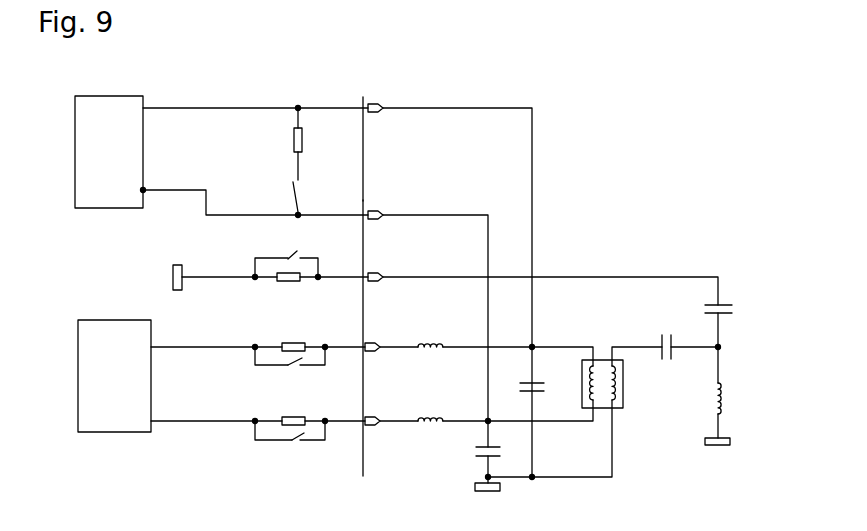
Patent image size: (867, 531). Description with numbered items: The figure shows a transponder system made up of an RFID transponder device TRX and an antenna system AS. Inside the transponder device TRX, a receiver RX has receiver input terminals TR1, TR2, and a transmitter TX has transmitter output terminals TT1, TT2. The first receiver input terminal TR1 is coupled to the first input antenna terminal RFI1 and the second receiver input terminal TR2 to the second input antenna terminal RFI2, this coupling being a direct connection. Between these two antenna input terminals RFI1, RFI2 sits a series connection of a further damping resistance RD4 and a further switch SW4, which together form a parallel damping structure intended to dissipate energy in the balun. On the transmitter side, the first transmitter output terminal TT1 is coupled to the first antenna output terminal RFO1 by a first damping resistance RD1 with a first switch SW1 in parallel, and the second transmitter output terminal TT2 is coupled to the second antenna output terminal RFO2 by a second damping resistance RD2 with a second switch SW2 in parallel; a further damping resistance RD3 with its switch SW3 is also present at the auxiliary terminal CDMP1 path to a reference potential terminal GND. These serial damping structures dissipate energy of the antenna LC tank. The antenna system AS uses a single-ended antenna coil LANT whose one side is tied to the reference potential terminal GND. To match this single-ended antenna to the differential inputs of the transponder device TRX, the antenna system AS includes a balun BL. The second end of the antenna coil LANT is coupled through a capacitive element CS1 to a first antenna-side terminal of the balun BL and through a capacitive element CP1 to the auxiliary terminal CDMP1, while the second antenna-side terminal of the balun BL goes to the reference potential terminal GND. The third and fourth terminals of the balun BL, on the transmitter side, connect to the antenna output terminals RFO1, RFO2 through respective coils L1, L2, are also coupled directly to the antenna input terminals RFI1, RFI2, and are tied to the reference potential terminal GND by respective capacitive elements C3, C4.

The RFID transponder device TRX is at (244, 50).
The antenna system AS is at (602, 192).
The receiver RX is at (109, 152).
The transmitter TX is at (114, 376).
The first receiver input terminal TR1 is at (143, 109).
The second receiver input terminal TR2 is at (146, 187).
The further damping resistance RD4 is at (294, 136).
The further switch SW4 is at (298, 198).
The first input antenna terminal RFI1 is at (450, 290).
The second input antenna terminal RFI2 is at (428, 329).
The reference potential terminal GND is at (173, 277).
The switch of further serial damping structure SW3 is at (285, 255).
The damping resistance of further serial damping structure RD3 is at (279, 279).
The auxiliary terminal CDMP1 is at (543, 289).
The capacitive element CP1 is at (734, 327).
The first transmitter output terminal TT1 is at (151, 349).
The second transmitter output terminal TT2 is at (151, 420).
The first damping resistance RD1 is at (300, 343).
The first switch SW1 is at (287, 368).
The second damping resistance RD2 is at (299, 403).
The second switch SW2 is at (291, 444).
The first antenna output terminal RFO1 is at (397, 334).
The second antenna output terminal RFO2 is at (397, 408).
The coil L1 is at (505, 360).
The coil L2 is at (505, 425).
The capacitive element C4 is at (547, 390).
The capacitive element C3 is at (544, 440).
The balun BL is at (623, 390).
The capacitive element CS1 is at (690, 341).
The single-ended antenna coil LANT is at (749, 392).